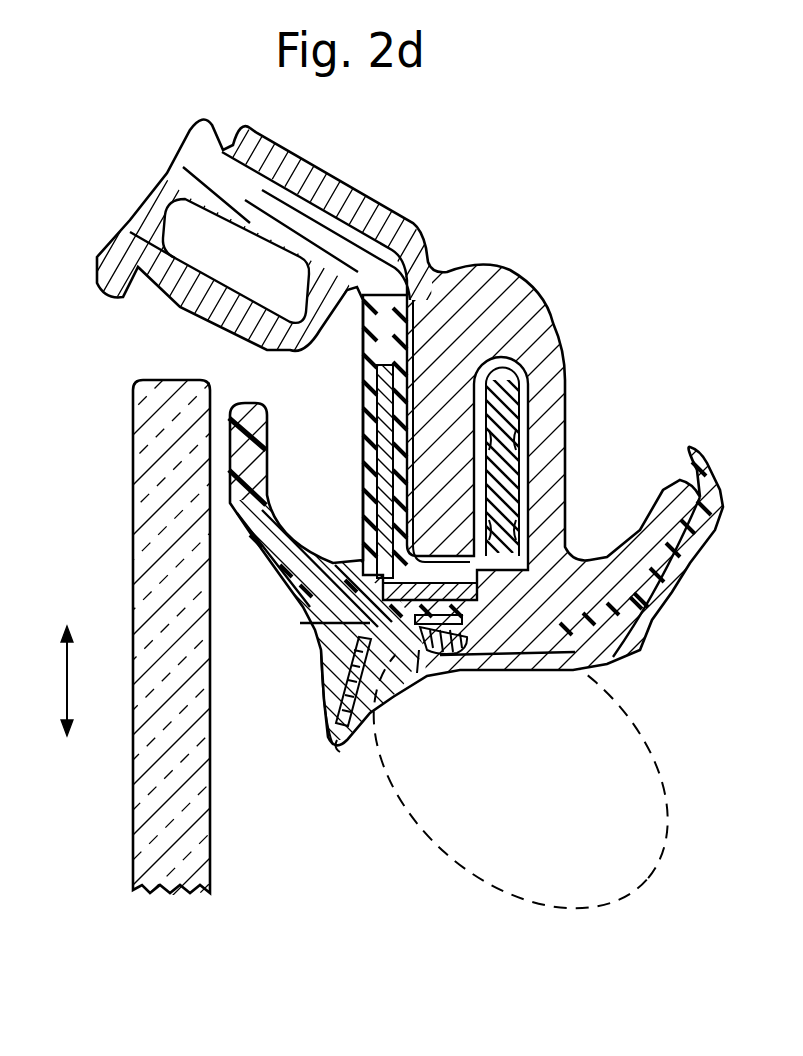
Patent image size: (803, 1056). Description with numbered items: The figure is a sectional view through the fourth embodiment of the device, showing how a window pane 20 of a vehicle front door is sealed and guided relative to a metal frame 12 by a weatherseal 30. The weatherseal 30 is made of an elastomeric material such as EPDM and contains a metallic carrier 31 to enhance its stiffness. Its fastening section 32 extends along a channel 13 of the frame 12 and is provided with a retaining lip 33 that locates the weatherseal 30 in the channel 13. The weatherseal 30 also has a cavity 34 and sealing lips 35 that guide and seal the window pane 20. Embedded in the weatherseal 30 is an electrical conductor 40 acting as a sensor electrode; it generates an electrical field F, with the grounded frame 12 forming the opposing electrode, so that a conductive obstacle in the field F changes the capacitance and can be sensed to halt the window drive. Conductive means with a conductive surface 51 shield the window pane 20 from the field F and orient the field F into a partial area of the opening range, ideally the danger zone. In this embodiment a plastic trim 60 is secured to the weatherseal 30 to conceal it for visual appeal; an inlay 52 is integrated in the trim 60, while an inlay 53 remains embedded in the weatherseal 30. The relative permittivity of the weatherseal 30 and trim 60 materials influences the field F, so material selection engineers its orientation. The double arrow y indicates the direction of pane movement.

The metal frame 12 is at (513, 266).
The channel 13 is at (562, 338).
The window pane 20 is at (140, 455).
The weatherseal 30 is at (718, 470).
The metallic carrier 31 is at (377, 402).
The fastening section 32 is at (510, 468).
The retaining lip 33 is at (488, 438).
The cavity 34 is at (212, 263).
The sealing lips 35 is at (252, 458).
The electrical conductor 40 is at (460, 655).
The conductive surface 51 is at (417, 673).
The inlay 52 is at (343, 684).
The inlay 53 is at (500, 668).
The trim 60 is at (327, 725).
The electrical field F is at (660, 775).
The direction y is at (60, 690).